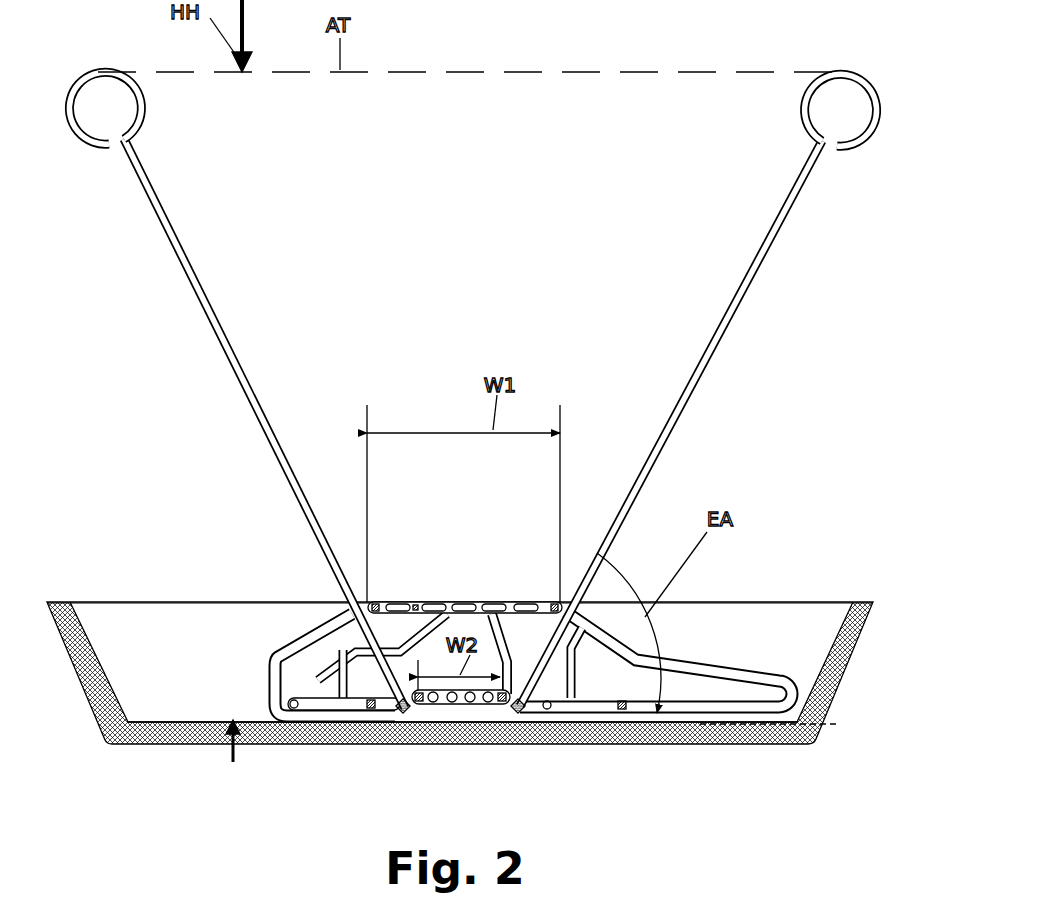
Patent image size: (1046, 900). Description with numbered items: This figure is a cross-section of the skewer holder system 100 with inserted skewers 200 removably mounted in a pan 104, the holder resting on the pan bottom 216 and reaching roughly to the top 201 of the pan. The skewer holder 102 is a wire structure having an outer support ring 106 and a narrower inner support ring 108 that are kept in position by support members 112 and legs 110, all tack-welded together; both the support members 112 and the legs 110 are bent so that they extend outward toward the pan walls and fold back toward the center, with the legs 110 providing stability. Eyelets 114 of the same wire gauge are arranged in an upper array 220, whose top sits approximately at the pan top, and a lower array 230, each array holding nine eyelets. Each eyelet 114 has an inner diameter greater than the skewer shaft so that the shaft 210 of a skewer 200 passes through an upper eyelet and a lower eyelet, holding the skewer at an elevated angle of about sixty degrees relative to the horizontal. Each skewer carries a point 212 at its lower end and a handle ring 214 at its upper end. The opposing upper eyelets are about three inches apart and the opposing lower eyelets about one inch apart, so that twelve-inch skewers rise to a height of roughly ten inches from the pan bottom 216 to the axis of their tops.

The skewer holder system 100 is at (482, 412).
The skewer holder 102 is at (345, 612).
The pan 104 is at (874, 600).
The outer support ring 106 is at (316, 684).
The inner support ring 108 is at (345, 702).
The legs 110 is at (274, 652).
The support members 112 is at (326, 653).
The eyelets 114 is at (405, 600).
The skewers 200 is at (482, 410).
The pan top 201 is at (90, 596).
The shaft 210 is at (218, 327).
The point 212 is at (412, 712).
The handle ring 214 is at (146, 118).
The pan bottom 216 is at (178, 722).
The upper array 220 is at (379, 586).
The lower array 230 is at (560, 728).